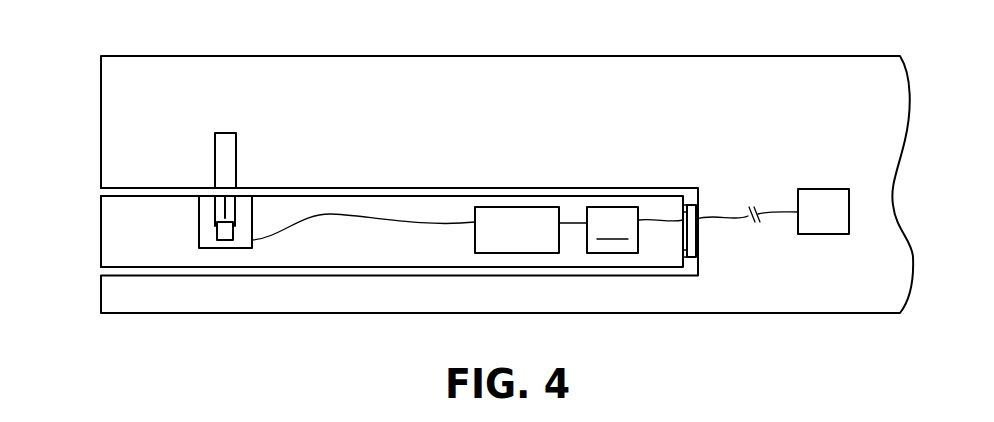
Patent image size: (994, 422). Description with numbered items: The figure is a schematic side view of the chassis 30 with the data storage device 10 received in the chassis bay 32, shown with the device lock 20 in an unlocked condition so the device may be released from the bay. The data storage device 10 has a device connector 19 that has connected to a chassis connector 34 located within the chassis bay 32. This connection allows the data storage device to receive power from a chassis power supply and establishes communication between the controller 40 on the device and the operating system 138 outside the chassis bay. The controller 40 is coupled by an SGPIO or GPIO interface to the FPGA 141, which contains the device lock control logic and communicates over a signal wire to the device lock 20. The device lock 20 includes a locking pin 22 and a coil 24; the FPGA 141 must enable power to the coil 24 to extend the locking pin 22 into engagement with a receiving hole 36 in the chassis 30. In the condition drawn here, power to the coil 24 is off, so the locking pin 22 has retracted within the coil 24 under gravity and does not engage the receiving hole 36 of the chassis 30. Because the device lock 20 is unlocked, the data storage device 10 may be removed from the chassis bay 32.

The data storage device 10 is at (101, 238).
The device connector 19 is at (683, 237).
The device lock 20 is at (199, 205).
The locking pin 22 is at (227, 210).
The coil 24 is at (208, 237).
The chassis 30 is at (577, 56).
The chassis bay 32 is at (570, 188).
The chassis connector 34 is at (700, 203).
The receiving hole 36 is at (237, 138).
The controller 40 is at (612, 230).
The operating system 138 is at (823, 189).
The FPGA 141 is at (512, 207).